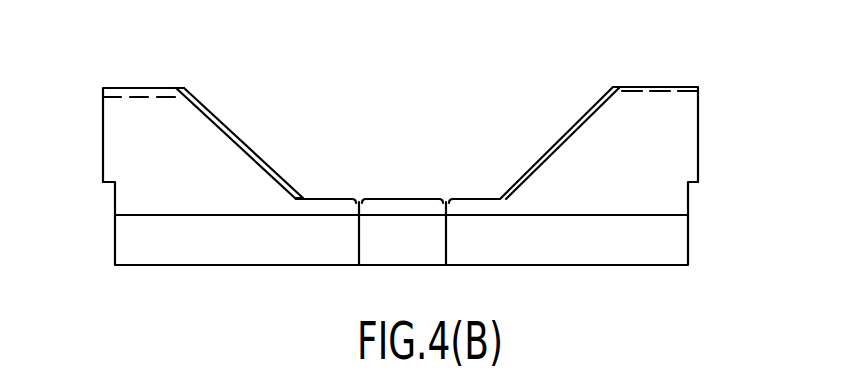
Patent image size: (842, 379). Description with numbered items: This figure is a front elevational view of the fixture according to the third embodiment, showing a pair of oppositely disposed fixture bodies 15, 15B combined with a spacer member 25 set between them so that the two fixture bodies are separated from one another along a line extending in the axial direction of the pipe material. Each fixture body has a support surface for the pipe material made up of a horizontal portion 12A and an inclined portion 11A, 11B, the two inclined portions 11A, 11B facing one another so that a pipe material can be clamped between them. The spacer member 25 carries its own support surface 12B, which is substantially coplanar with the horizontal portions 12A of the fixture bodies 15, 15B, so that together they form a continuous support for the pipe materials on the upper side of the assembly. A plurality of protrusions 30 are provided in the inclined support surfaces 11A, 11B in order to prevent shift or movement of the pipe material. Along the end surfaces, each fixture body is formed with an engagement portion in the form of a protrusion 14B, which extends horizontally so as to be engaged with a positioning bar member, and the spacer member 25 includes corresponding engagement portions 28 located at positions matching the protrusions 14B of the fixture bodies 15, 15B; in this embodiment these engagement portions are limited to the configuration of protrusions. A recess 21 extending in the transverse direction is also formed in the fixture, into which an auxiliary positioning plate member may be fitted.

The fixture body 15 is at (118, 153).
The fixture body 15B is at (680, 152).
The recess 21 is at (115, 202).
The protrusion 14B is at (150, 247).
The engagement portions 28 is at (370, 243).
The spacer member 25 is at (407, 252).
The horizontal portion of the support surface 12A is at (333, 199).
The support surface 12B is at (423, 199).
The inclined portion 11A is at (250, 159).
The inclined portion 11B is at (580, 133).
The protrusions 30 is at (208, 122).